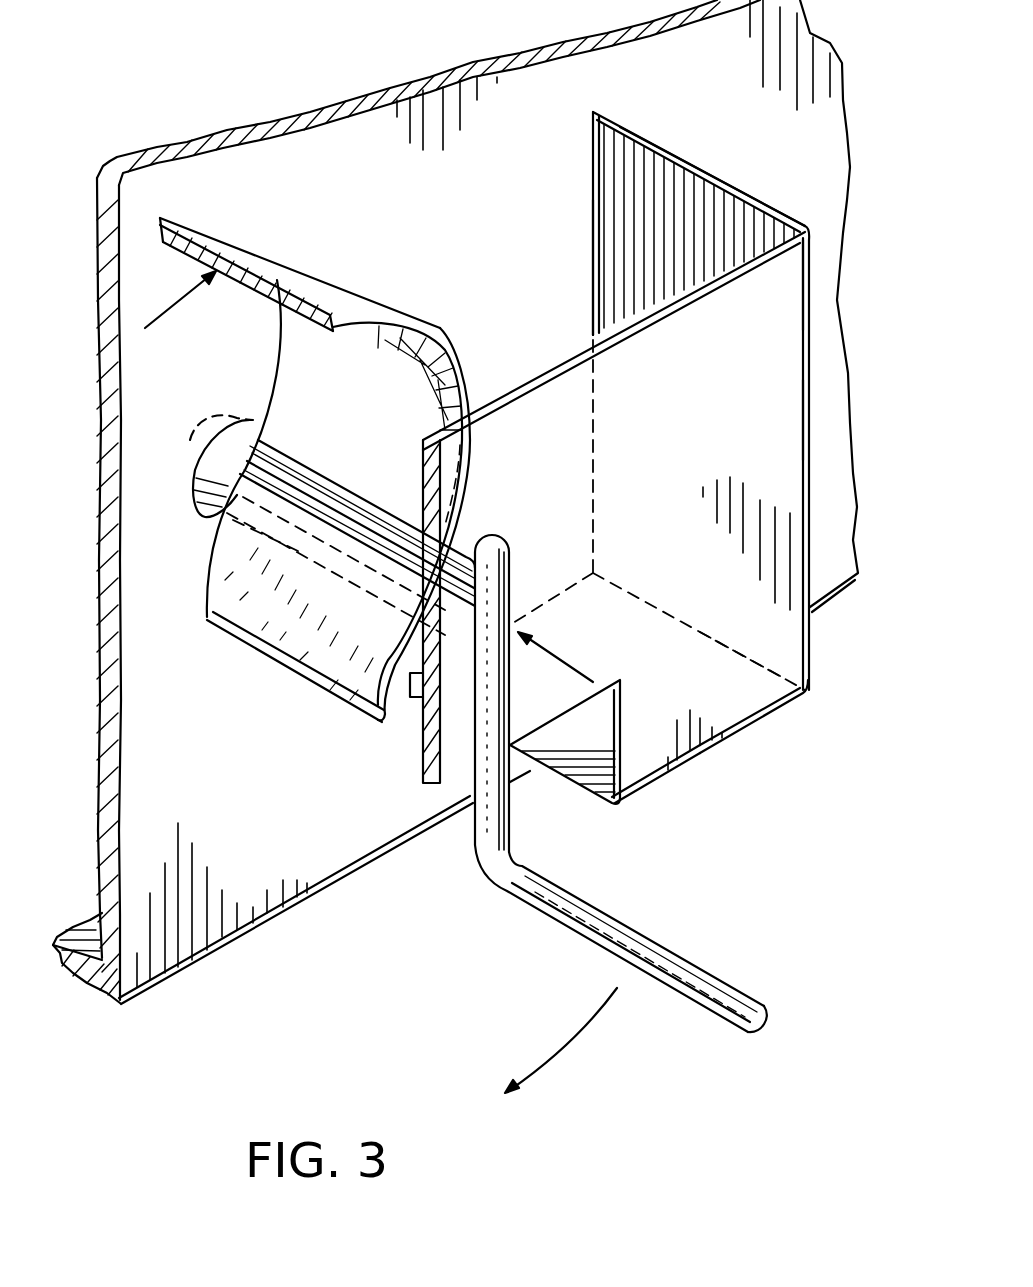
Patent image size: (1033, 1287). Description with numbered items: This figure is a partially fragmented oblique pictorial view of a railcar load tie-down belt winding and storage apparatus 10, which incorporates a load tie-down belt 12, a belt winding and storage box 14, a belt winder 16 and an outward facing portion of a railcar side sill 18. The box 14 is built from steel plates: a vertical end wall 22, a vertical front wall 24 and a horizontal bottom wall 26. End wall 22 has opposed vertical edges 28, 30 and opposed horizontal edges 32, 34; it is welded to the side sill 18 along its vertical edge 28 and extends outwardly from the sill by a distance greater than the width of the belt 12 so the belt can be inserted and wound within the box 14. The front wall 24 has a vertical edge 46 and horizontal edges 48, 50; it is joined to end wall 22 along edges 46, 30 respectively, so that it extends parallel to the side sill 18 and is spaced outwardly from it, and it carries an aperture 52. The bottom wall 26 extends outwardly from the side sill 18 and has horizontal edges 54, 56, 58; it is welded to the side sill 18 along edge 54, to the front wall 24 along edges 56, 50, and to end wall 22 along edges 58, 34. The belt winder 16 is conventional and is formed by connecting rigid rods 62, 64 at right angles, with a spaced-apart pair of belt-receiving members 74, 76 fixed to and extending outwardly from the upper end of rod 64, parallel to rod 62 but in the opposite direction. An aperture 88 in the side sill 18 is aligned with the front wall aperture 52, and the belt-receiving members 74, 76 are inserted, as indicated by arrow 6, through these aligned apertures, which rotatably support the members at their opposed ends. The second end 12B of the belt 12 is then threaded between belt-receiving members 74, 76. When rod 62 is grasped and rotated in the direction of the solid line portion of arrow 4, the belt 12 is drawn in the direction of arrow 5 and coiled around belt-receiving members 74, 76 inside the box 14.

The railcar load tie-down belt winding and storage apparatus 10 is at (455, 502).
The railcar side sill 18 is at (310, 166).
The load tie-down belt 12 is at (334, 266).
The second end of belt 12B is at (262, 650).
The belt winding and storage box 14 is at (660, 464).
The end wall 22 is at (615, 216).
The vertical edge of end wall 28 is at (592, 277).
The horizontal edge of end wall 32 is at (670, 147).
The vertical edge of front wall 46 is at (812, 298).
The vertical edge of end wall 30 is at (803, 418).
The front wall 24 is at (770, 473).
The horizontal edge of front wall 48 is at (560, 364).
The aperture 52 is at (442, 542).
The horizontal edge of bottom wall 54 is at (560, 588).
The horizontal edge of bottom wall 58 is at (661, 597).
The horizontal edge of end wall 34 is at (717, 642).
The bottom wall 26 is at (578, 728).
The horizontal edge of front wall 50 is at (634, 796).
The horizontal edge of bottom wall 56 is at (735, 737).
The belt winder 16 is at (637, 783).
The rod 64 is at (510, 790).
The rod 62 is at (702, 962).
The belt-receiving member 76 is at (308, 468).
The aperture 88 is at (203, 460).
The belt-receiving member 74 is at (248, 540).
The arrow 5 is at (170, 303).
The arrow 6 is at (577, 630).
The arrow 4 is at (560, 1043).